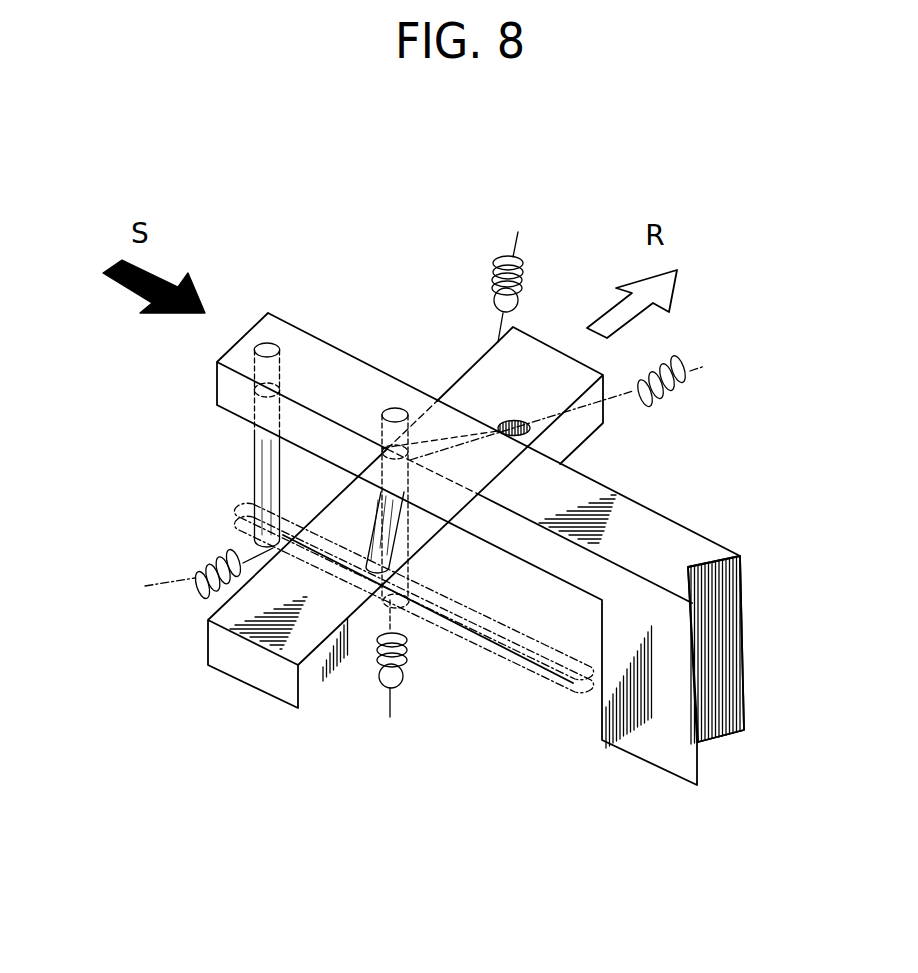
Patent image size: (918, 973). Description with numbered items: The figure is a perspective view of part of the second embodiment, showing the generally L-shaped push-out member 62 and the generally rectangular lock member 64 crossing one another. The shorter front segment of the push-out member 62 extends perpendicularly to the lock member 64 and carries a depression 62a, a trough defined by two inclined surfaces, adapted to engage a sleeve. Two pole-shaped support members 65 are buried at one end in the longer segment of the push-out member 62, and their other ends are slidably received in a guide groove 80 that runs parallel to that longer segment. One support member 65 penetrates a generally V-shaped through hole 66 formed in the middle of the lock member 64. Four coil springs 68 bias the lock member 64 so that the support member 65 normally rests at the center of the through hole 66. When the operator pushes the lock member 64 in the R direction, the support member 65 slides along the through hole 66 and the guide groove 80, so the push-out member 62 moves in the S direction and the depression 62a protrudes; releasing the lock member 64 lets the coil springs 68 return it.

The push-out member 62 is at (650, 533).
The depression 62a is at (723, 615).
The lock member 64 is at (252, 667).
The support members 65 is at (376, 422).
The through hole 66 is at (511, 421).
The coil springs 68 is at (490, 283).
The guide groove 80 is at (528, 685).